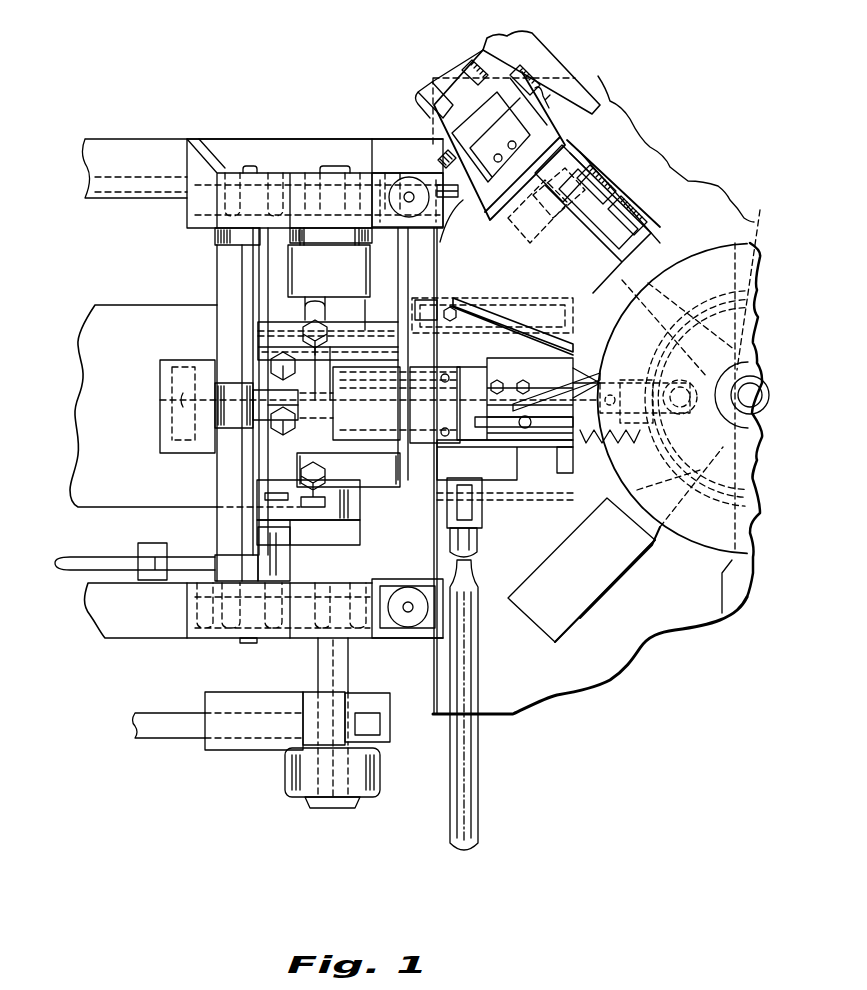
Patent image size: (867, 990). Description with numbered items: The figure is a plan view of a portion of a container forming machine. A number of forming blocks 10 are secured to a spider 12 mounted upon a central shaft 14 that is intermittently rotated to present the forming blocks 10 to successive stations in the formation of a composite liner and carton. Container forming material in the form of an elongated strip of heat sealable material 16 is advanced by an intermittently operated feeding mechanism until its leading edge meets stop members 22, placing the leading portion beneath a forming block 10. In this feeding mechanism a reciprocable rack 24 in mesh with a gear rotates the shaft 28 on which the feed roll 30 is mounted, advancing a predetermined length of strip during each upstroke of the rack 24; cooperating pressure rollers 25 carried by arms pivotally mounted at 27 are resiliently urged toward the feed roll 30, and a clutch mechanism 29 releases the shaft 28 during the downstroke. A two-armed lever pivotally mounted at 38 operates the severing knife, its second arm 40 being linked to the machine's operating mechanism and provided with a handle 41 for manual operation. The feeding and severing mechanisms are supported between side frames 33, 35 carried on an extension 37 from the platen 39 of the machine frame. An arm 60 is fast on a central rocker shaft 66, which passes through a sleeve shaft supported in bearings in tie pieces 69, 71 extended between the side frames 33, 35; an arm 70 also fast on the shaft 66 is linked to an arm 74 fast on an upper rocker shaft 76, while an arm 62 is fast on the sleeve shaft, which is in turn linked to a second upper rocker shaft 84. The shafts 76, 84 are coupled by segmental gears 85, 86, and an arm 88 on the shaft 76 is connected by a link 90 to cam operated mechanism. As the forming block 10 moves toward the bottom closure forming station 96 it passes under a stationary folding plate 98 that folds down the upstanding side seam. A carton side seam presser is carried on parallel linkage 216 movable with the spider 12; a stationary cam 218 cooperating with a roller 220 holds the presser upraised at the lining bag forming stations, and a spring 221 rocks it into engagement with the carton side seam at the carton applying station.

The forming block 10 is at (625, 228).
The spider 12 is at (707, 545).
The central shaft 14 is at (756, 386).
The strip of heat sealable material 16 is at (97, 507).
The stop members 22 is at (560, 470).
The reciprocable rack 24 is at (176, 735).
The pressure rollers 25 is at (350, 510).
The pivot 27 is at (243, 168).
The shaft 28 is at (348, 663).
The clutch mechanism 29 is at (396, 737).
The feed roll 30 is at (370, 278).
The side frame 33 is at (293, 173).
The side frame 35 is at (210, 638).
The extension 37 is at (104, 640).
The block 38 is at (265, 535).
The platen 39 is at (556, 703).
The second arm 40 is at (197, 558).
The handle 41 is at (70, 566).
The arm 60 is at (510, 357).
The arm 62 is at (540, 470).
The central rocker shaft 66 is at (183, 400).
The tie piece 69 is at (215, 262).
The arm 70 is at (278, 425).
The tie piece 71 is at (440, 244).
The arm 74 is at (262, 332).
The upper rocker shaft 76 is at (480, 350).
The second upper rocker shaft 84 is at (476, 533).
The segmental gear 85 is at (315, 320).
The segmental gear 86 is at (300, 500).
The arm 88 is at (483, 497).
The link 90 is at (470, 661).
The bottom closure forming station 96 is at (628, 134).
The stationary folding plate 98 is at (590, 338).
The parallel linkage 216 is at (617, 440).
The stationary cam 218 is at (763, 271).
The roller 220 is at (742, 420).
The spring 221 is at (680, 487).